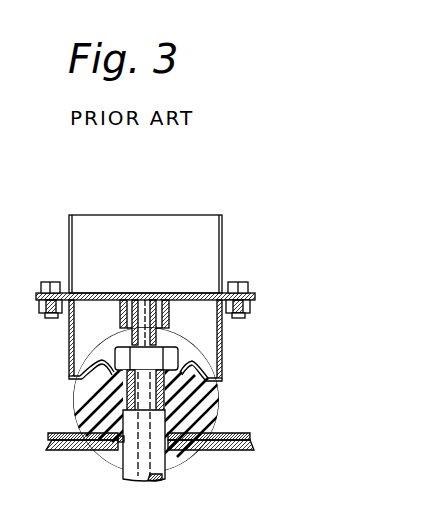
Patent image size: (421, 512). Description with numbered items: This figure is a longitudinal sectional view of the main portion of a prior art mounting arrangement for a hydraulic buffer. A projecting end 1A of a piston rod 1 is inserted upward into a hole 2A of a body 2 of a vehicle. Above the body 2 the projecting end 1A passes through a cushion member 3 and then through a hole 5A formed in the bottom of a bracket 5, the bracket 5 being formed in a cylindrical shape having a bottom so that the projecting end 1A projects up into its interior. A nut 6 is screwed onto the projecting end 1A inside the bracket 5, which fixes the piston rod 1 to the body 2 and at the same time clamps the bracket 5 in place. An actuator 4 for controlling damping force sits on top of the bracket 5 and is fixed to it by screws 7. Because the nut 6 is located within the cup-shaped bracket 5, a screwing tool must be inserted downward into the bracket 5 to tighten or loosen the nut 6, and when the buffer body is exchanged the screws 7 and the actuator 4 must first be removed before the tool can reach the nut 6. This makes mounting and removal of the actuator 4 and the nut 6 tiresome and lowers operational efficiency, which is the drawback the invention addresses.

The piston rod 1 is at (155, 462).
The projecting end 1A is at (118, 338).
The body 2 is at (236, 431).
The hole 2A is at (128, 442).
The cushion member 3 is at (219, 403).
The actuator 4 is at (137, 227).
The bracket 5 is at (225, 335).
The hole 5A is at (100, 377).
The nut 6 is at (180, 351).
The screws 7 is at (49, 281).